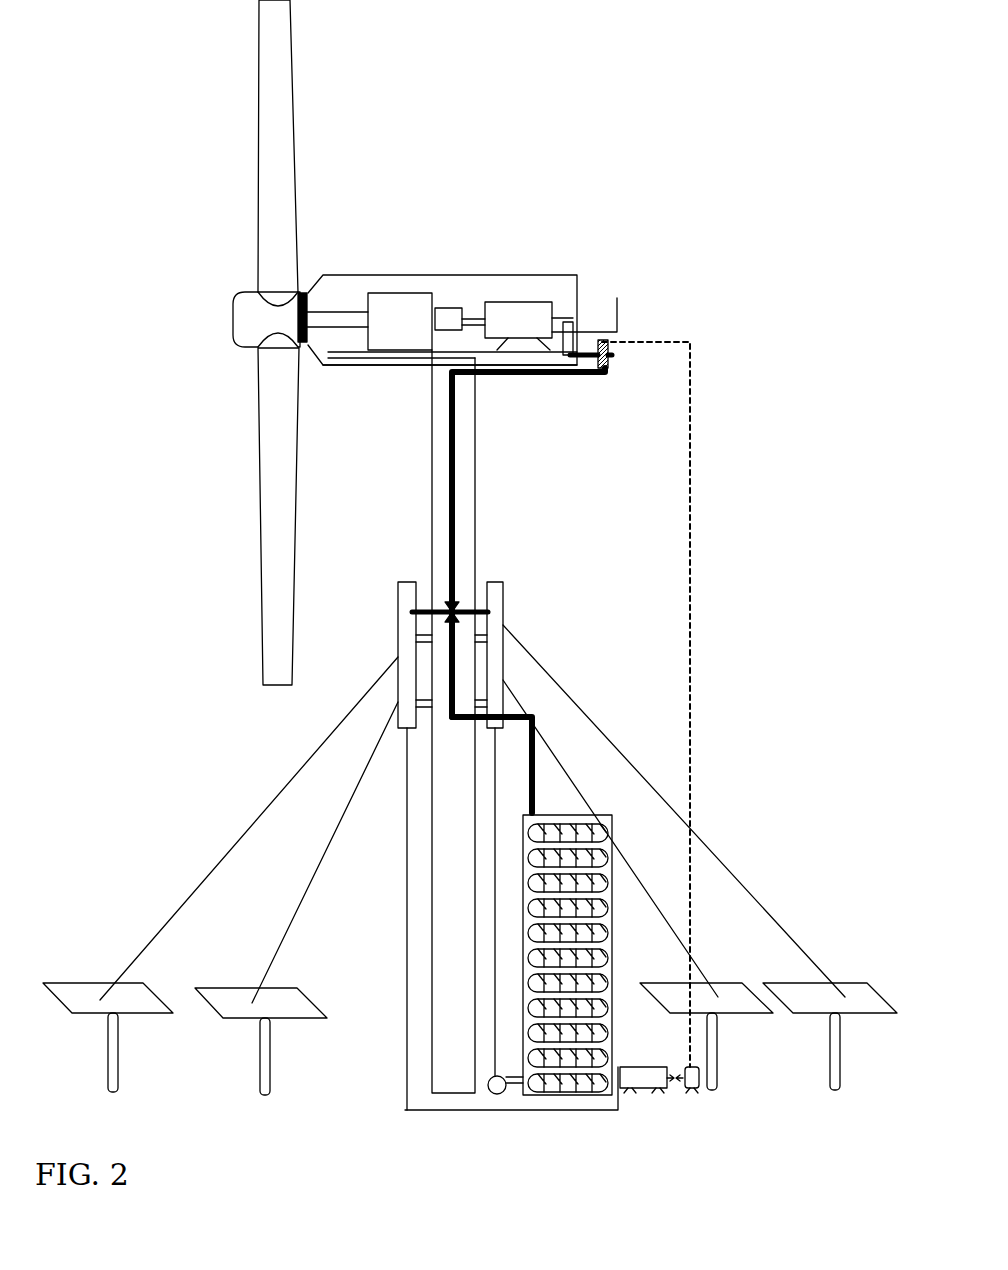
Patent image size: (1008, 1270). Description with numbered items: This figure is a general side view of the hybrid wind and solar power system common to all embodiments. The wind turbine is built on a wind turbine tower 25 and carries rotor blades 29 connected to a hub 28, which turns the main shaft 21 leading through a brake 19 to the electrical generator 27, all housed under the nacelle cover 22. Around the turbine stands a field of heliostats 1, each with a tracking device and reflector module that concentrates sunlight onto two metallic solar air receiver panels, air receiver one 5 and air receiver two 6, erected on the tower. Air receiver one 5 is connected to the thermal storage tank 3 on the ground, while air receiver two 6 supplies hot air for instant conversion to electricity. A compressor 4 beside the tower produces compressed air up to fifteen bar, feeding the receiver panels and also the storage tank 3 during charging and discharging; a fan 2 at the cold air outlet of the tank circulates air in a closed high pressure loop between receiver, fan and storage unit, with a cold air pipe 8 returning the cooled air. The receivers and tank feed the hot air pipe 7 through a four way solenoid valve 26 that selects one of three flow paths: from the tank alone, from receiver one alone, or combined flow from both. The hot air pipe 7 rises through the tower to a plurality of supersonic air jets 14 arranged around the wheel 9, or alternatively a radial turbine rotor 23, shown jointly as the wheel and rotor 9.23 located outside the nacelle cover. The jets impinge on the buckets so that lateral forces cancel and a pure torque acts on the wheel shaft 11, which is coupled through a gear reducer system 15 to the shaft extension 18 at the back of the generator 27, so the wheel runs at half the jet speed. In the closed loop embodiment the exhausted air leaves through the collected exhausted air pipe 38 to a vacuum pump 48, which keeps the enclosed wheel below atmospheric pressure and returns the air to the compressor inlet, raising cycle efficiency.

The heliostat 1 is at (65, 1005).
The fan 2 is at (500, 1094).
The storage tank 3 is at (571, 1095).
The compressor 4 is at (645, 1088).
The air receiver one 5 is at (398, 592).
The air receiver two 6 is at (503, 592).
The hot air pipe 7 is at (455, 458).
The cold air pipe 8 is at (405, 947).
The wheel / radial turbine rotor 9.23 is at (608, 358).
The wheel 9 is at (603, 354).
The radial turbine rotor 23 is at (603, 354).
The wheel shaft 11 is at (588, 375).
The supersonic air jets 14 is at (605, 372).
The gear reducer system 15 is at (398, 293).
The shaft extension 18 is at (573, 318).
The brake 19 is at (445, 308).
The main shaft 21 is at (340, 312).
The nacelle cover 22 is at (363, 275).
The wind turbine tower 25 is at (450, 860).
The four way solenoid valve 26 is at (443, 641).
The generator 27 is at (522, 302).
The hub 28 is at (250, 312).
The rotor blade 29 is at (276, 93).
The collected exhausted air pipe 38 is at (695, 537).
The vacuum pump 48 is at (690, 1093).